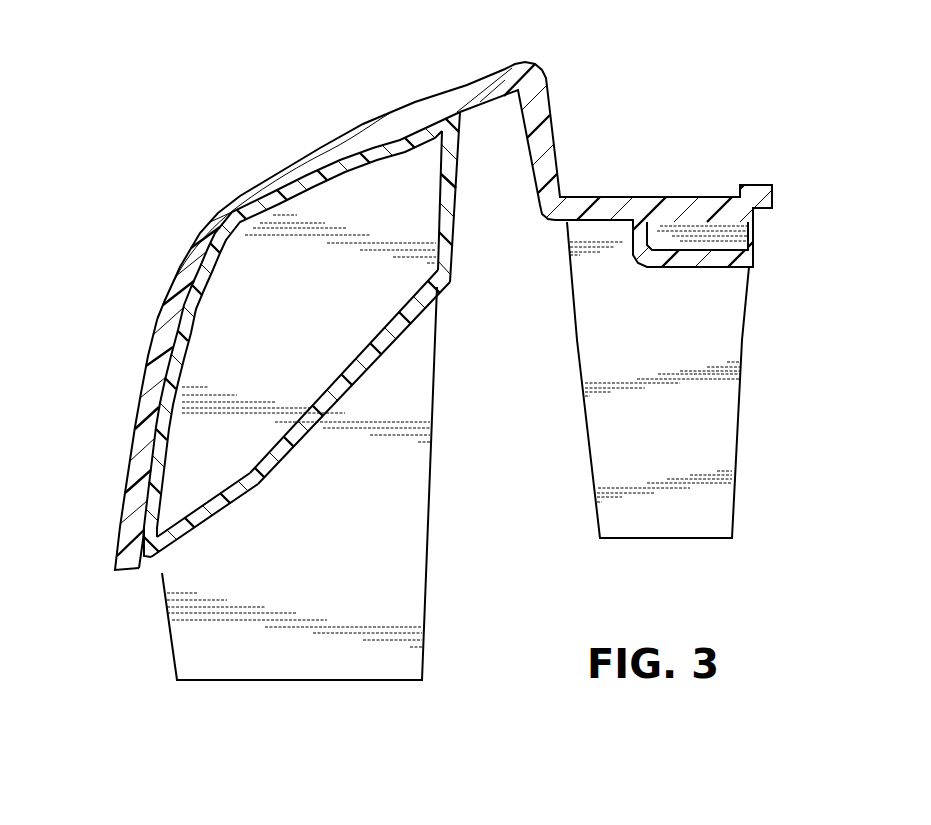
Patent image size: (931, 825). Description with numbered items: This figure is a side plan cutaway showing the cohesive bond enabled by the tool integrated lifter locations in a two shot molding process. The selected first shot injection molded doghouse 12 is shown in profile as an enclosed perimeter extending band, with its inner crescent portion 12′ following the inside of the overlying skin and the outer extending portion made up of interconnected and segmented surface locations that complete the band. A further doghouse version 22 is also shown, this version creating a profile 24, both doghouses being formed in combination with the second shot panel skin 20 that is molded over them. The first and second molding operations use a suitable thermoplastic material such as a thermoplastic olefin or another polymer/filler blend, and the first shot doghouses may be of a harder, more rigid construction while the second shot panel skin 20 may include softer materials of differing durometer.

The doghouse 12 is at (392, 362).
The inner crescent portion 12′ is at (227, 260).
The second shot panel skin 20 is at (313, 150).
The doghouse version 22 is at (745, 330).
The profile 24 is at (757, 248).